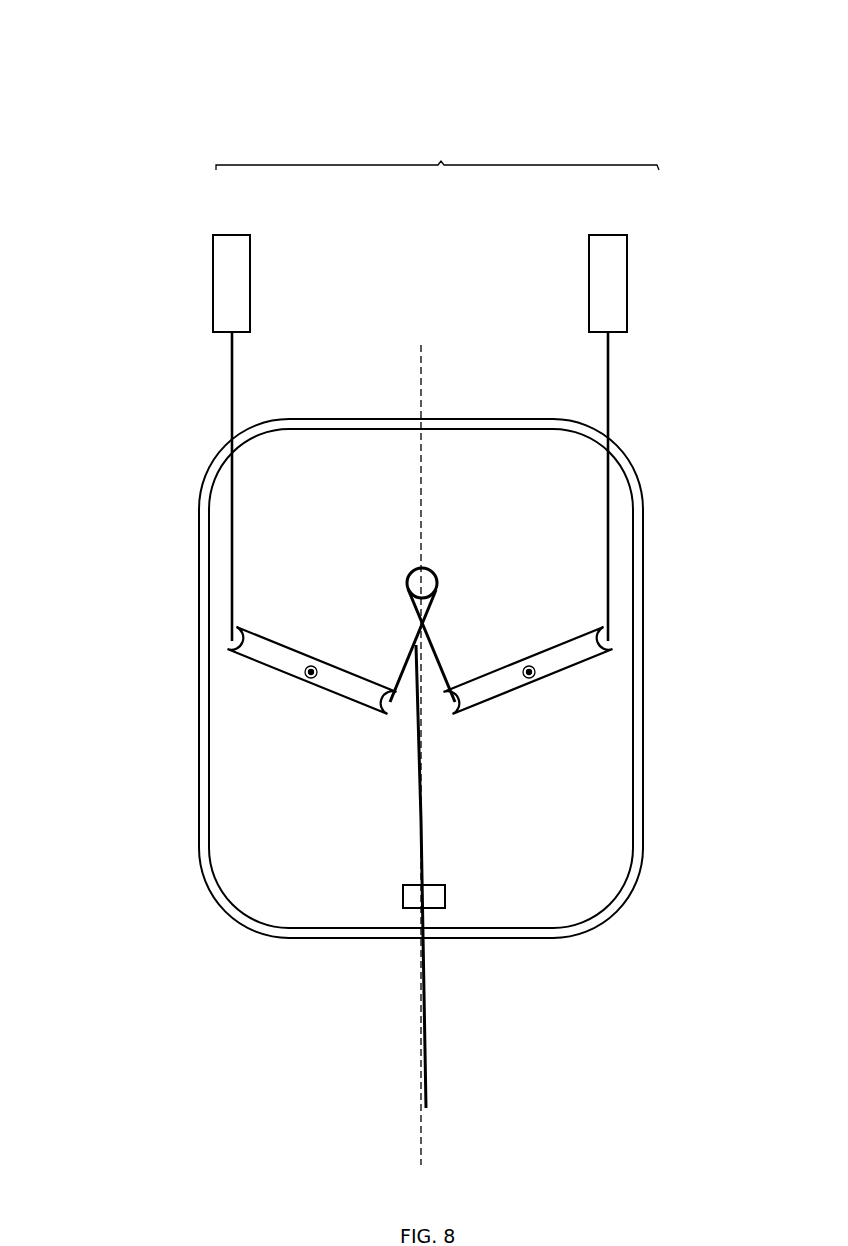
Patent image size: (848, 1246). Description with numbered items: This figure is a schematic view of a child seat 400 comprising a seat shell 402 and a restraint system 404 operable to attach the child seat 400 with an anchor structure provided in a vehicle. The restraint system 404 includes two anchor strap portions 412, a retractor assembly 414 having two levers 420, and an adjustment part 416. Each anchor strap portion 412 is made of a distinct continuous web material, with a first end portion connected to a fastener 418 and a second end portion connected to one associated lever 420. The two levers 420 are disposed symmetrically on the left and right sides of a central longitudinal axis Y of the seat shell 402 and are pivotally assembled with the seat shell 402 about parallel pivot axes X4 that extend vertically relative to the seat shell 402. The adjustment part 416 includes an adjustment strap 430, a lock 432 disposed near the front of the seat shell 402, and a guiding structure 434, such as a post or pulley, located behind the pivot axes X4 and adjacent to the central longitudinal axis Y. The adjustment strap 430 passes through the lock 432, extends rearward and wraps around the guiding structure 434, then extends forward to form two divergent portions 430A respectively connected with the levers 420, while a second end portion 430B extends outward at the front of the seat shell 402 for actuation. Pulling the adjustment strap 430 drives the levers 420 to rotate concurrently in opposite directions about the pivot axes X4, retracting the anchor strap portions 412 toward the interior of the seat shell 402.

The child seat 400 is at (79, 31).
The seat shell 402 is at (641, 866).
The restraint system 404 is at (437, 152).
The anchor strap portions 412 is at (231, 378).
The retractor assembly 414 is at (641, 653).
The adjustment part 416 is at (409, 942).
The fastener 418 is at (219, 293).
The levers 420 is at (270, 674).
The adjustment strap 430 is at (420, 816).
The divergent portions 430A is at (405, 722).
The second end portion 430B is at (436, 1060).
The lock 432 is at (446, 904).
The guiding structure 434 is at (411, 572).
The pivot axes X4 is at (310, 682).
The central longitudinal axis Y is at (421, 371).